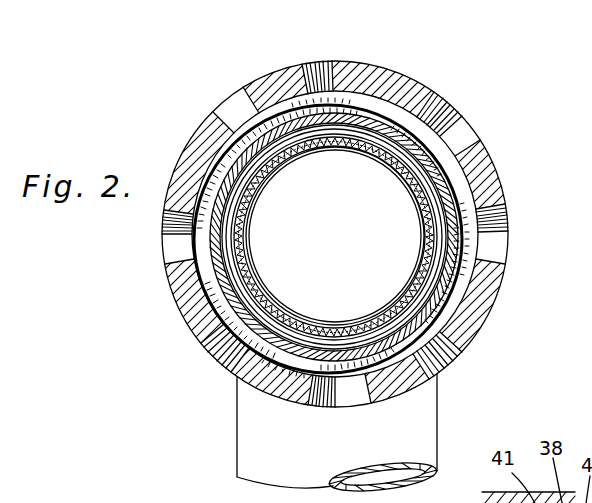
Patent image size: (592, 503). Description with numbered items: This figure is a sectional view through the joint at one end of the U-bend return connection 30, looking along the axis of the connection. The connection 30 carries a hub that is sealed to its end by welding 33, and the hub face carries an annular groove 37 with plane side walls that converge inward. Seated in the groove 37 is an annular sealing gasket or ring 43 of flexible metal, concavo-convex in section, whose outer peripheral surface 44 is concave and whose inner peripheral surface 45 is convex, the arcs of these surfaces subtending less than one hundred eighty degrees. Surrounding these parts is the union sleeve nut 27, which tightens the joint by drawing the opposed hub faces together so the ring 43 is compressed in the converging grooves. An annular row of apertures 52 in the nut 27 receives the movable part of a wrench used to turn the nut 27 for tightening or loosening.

The union sleeve nut 27 is at (477, 156).
The annular row of apertures 52 is at (332, 62).
The outer peripheral surface 44 is at (461, 250).
The annular sealing gasket or ring 43 is at (455, 199).
The annular groove 37 is at (263, 160).
The inner peripheral surface 45 is at (434, 240).
The welding 33 is at (424, 268).
The U-bend return connection 30 is at (248, 452).